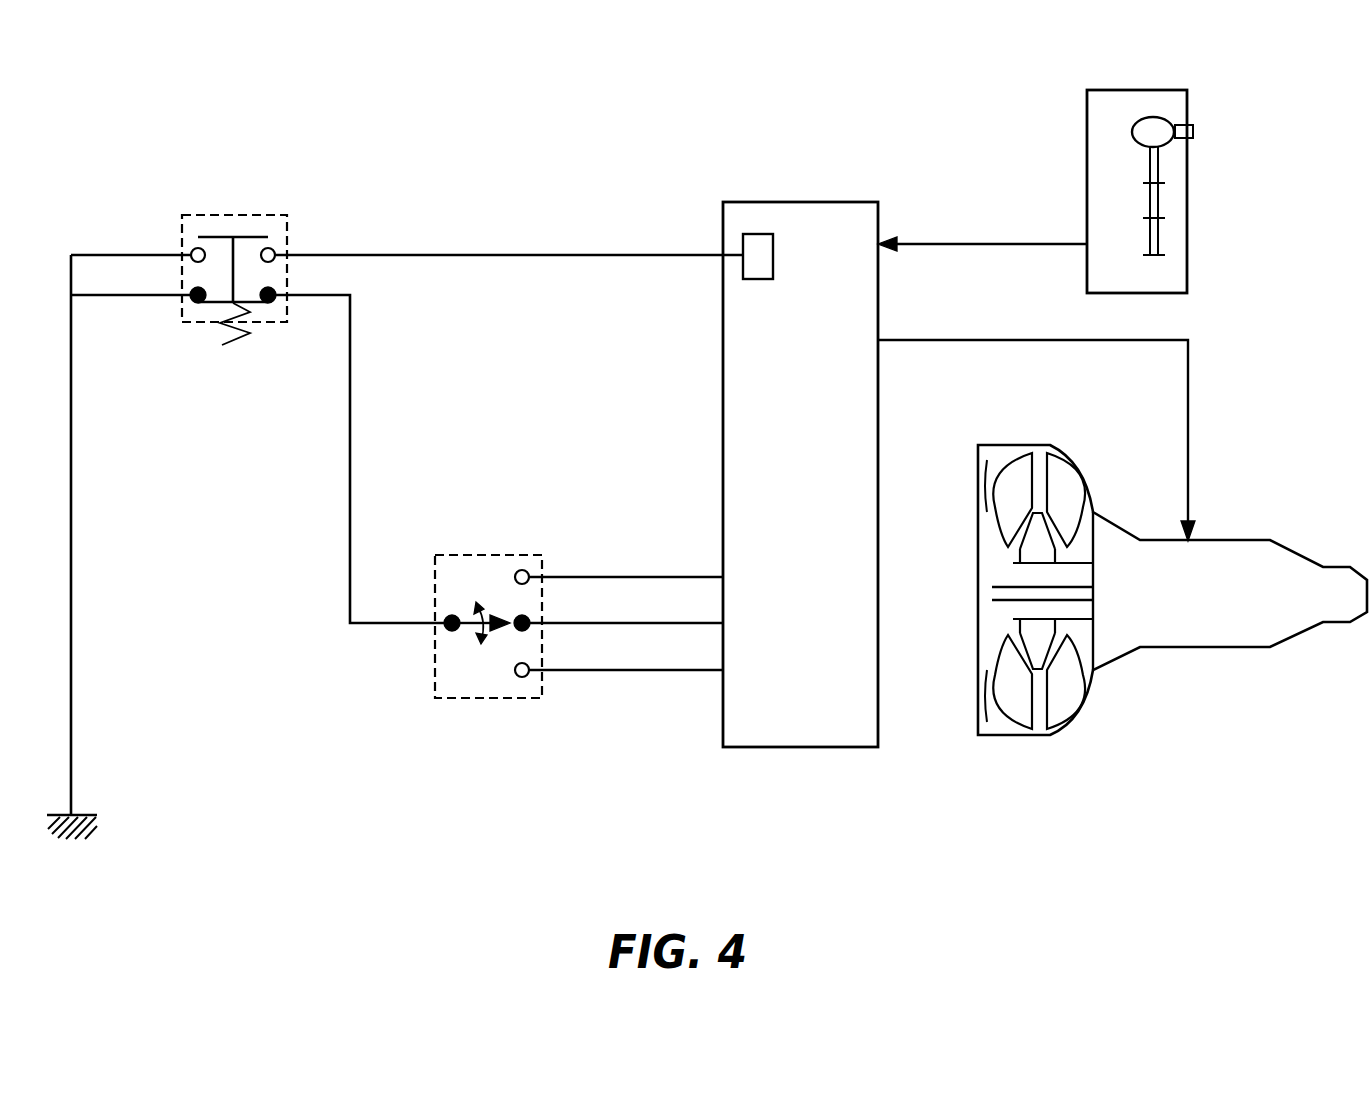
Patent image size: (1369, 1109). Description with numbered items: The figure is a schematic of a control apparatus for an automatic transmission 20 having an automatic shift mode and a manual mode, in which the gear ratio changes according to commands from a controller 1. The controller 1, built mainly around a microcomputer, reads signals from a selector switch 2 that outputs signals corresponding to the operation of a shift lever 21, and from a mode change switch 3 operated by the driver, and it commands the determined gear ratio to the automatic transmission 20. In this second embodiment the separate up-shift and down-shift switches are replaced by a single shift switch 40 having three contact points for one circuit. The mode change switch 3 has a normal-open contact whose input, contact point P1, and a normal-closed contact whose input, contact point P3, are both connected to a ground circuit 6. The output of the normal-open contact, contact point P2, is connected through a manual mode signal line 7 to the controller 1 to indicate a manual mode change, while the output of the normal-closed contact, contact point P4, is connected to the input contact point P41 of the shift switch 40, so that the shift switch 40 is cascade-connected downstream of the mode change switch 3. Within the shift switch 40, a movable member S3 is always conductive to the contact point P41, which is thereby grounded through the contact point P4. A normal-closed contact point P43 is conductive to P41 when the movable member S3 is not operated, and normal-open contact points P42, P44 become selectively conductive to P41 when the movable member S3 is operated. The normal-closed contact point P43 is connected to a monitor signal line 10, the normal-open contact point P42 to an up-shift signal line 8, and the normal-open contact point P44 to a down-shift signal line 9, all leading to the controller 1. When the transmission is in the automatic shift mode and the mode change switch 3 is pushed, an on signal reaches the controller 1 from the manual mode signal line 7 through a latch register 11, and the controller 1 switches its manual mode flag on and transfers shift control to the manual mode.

The controller 1 is at (737, 202).
The selector switch 2 is at (1146, 191).
The mode change switch 3 is at (232, 260).
The ground circuit 6 is at (72, 661).
The manual mode signal line 7 is at (562, 255).
The up-shift signal line 8 is at (623, 577).
The down-shift signal line 9 is at (637, 670).
The monitor signal line 10 is at (630, 623).
The latch register 11 is at (742, 241).
The automatic transmission 20 is at (1220, 540).
The shift lever 21 is at (1158, 127).
The shift switch 40 is at (481, 621).
The contact point P1 is at (192, 250).
The contact point P2 is at (275, 250).
The contact point P3 is at (192, 302).
The contact point P4 is at (272, 304).
The contact point P41 is at (449, 614).
The normal-open contact point P42 is at (527, 571).
The normal-closed contact point P43 is at (527, 630).
The normal-open contact point P44 is at (526, 677).
The movable member S3 is at (476, 628).